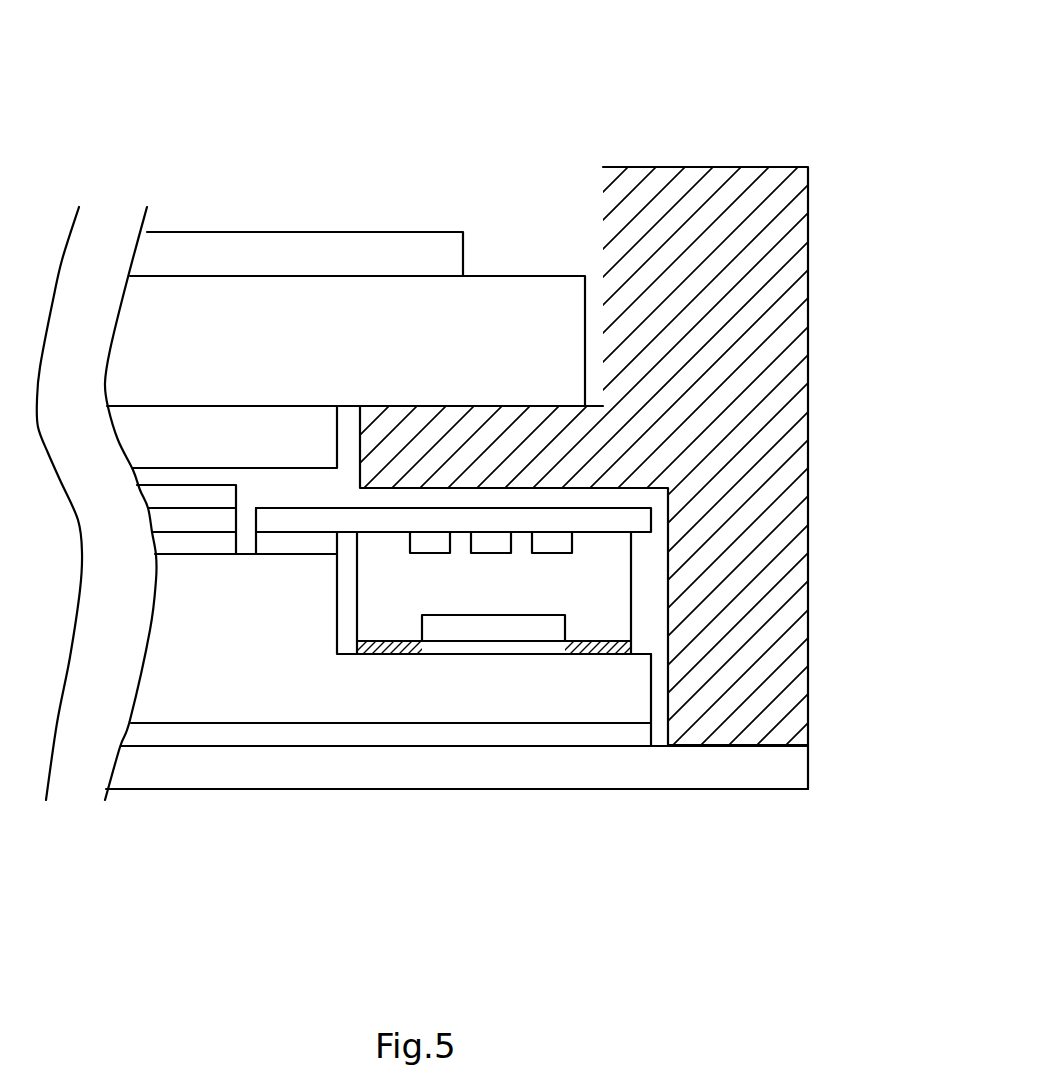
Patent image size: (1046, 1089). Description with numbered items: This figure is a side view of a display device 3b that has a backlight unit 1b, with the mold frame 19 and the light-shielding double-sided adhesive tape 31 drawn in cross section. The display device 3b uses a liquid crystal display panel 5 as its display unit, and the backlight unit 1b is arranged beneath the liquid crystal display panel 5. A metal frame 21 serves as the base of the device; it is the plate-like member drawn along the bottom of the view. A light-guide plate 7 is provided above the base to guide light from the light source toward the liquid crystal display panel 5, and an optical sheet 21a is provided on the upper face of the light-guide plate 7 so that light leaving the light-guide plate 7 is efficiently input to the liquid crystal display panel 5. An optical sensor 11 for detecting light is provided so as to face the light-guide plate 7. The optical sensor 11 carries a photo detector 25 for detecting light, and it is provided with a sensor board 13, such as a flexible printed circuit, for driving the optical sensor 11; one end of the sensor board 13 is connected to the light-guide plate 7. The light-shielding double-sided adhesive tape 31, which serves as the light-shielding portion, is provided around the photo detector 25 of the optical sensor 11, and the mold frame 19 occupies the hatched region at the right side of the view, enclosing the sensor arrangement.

The backlight unit 1b is at (423, 805).
The display device 3b is at (456, 150).
The liquid crystal display panel 5 is at (213, 260).
The light-guide plate 7 is at (627, 692).
The optical sensor 11 is at (612, 593).
The sensor board 13 is at (625, 522).
The mold frame 19 is at (740, 222).
The metal frame 21 is at (147, 773).
The optical sheet 21a is at (207, 730).
The photo detector 25 is at (502, 623).
The light-shielding double-sided adhesive tape 31 is at (592, 655).